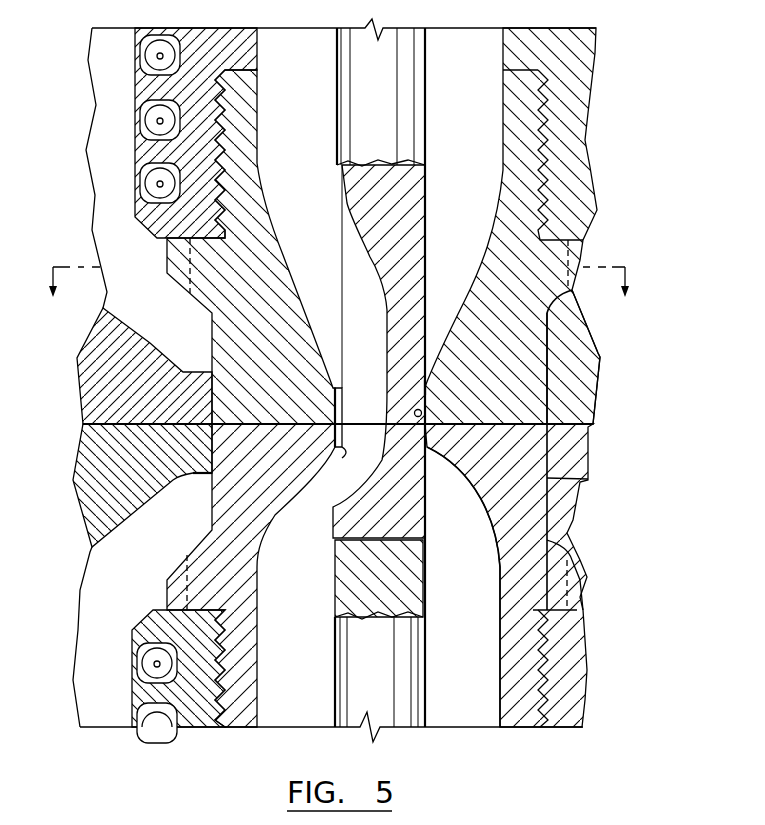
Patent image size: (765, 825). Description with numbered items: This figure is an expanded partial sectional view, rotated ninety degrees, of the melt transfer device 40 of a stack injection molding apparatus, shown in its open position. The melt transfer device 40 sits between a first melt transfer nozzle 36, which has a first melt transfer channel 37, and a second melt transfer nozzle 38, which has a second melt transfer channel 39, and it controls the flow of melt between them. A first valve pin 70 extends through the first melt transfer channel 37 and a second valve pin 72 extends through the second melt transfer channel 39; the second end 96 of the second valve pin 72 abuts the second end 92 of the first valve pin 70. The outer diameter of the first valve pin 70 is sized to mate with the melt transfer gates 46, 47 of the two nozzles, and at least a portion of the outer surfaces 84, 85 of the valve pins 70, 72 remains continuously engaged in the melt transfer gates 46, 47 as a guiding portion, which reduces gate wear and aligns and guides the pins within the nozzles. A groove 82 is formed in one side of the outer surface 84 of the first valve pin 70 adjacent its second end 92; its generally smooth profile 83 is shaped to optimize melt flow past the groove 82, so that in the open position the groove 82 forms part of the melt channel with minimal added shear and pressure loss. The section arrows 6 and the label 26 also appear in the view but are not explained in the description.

The section line 6- 6 is at (337, 297).
The tubing hanger body 26 is at (120, 423).
The first melt transfer nozzle 36 is at (520, 120).
The first melt transfer channel 37 is at (285, 162).
The second melt transfer nozzle 38 is at (513, 708).
The second melt transfer channel 39 is at (284, 639).
The melt transfer device 40 is at (606, 345).
The melt transfer gate 46 is at (422, 413).
The melt transfer gate 47 is at (343, 456).
The first valve pin 70 is at (359, 139).
The second valve pin 72 is at (365, 592).
The groove 82 is at (432, 393).
The profile 83 is at (358, 312).
The outer surface 84 is at (432, 383).
The outer surface 85 is at (430, 572).
The second end 92 is at (430, 500).
The second end 96 is at (333, 580).